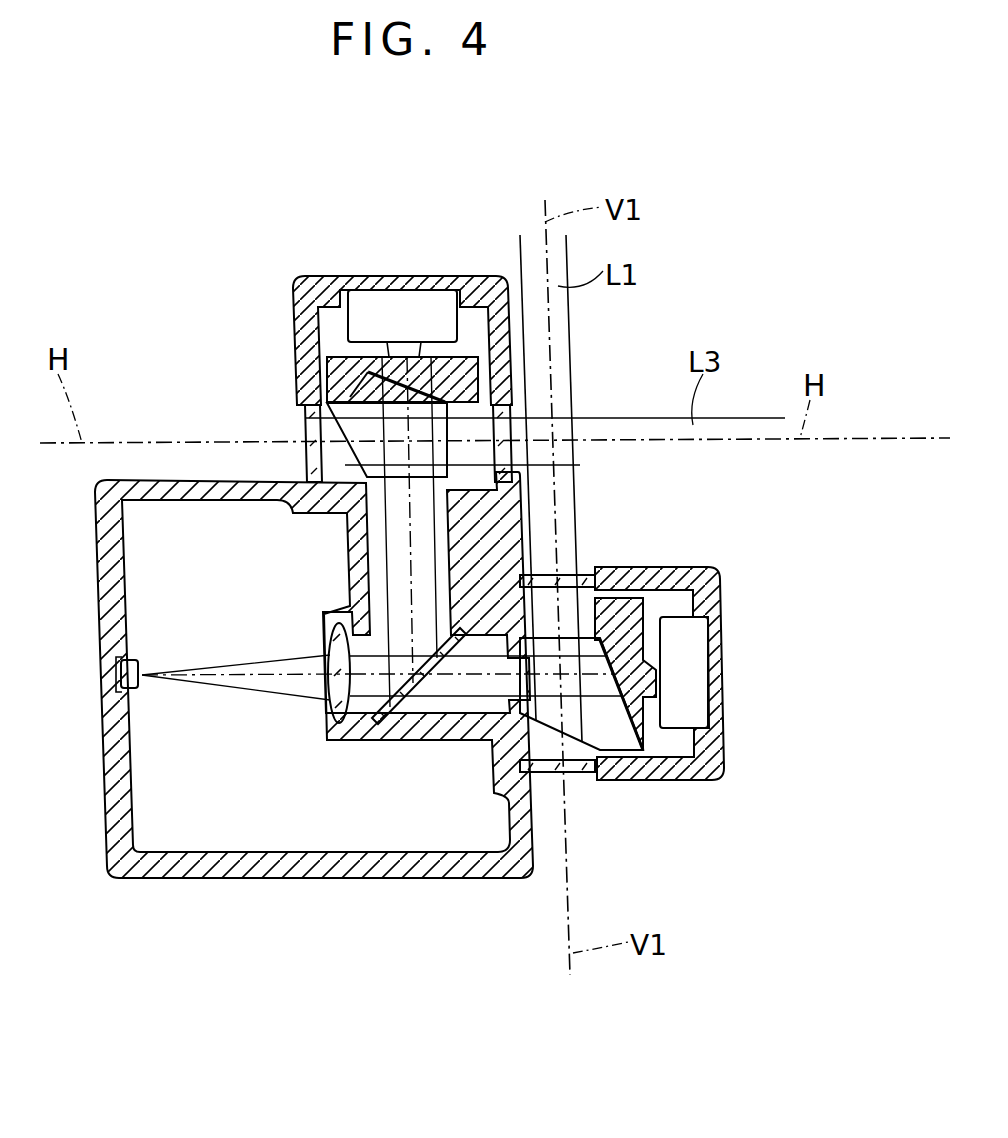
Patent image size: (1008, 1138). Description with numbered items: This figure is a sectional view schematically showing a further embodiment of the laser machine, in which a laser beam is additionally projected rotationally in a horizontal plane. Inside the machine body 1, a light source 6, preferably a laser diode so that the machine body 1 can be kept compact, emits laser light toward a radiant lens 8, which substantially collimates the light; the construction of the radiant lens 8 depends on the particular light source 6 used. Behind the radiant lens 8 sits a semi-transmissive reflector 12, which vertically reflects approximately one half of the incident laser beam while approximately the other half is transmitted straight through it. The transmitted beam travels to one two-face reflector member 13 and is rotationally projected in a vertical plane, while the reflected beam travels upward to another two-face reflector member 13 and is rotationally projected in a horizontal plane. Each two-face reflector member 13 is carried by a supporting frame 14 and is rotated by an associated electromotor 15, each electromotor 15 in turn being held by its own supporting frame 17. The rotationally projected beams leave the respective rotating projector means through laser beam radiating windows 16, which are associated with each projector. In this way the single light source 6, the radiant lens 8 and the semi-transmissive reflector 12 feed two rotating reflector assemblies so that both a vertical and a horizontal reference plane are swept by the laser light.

The machine body 1 is at (280, 878).
The light source 6 is at (137, 690).
The radiant lens 8 is at (325, 683).
The semi-transmissive reflector 12 is at (418, 705).
The two-face reflector member 13 is at (352, 397).
The supporting frame 14 is at (347, 365).
The electromotor 15 is at (380, 303).
The laser beam radiating window 16 is at (303, 427).
The supporting frame 17 is at (440, 276).